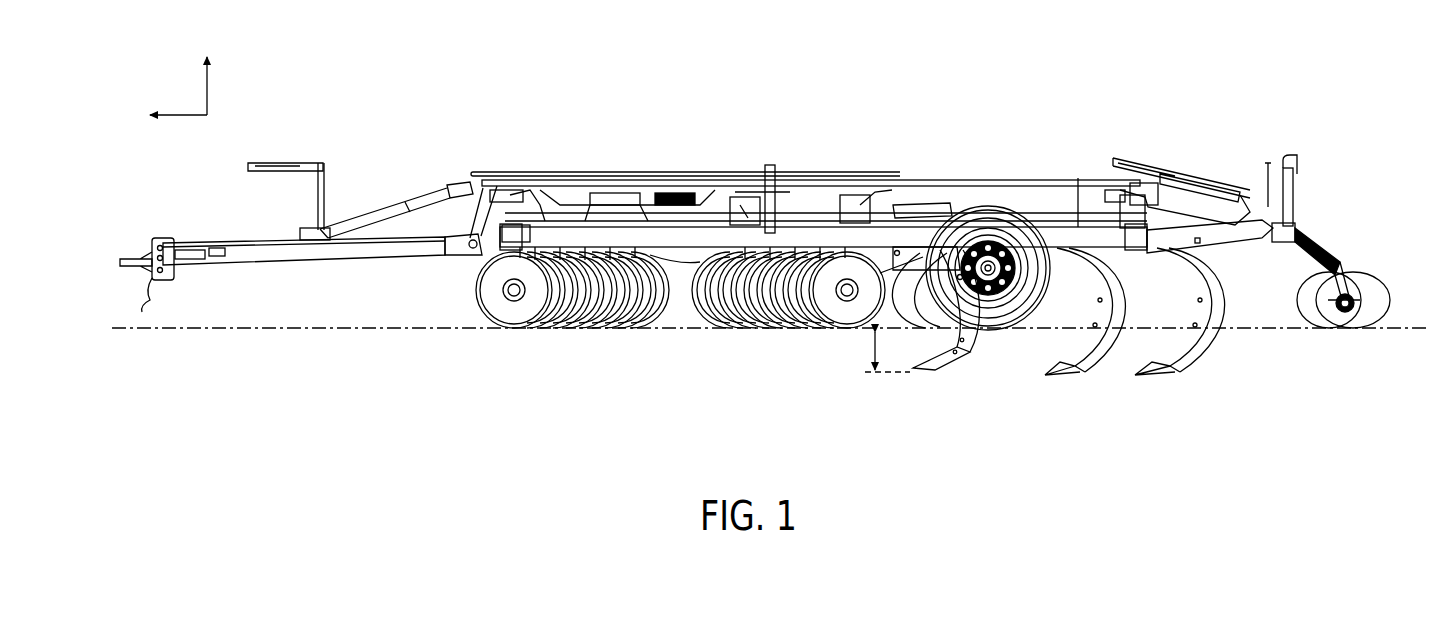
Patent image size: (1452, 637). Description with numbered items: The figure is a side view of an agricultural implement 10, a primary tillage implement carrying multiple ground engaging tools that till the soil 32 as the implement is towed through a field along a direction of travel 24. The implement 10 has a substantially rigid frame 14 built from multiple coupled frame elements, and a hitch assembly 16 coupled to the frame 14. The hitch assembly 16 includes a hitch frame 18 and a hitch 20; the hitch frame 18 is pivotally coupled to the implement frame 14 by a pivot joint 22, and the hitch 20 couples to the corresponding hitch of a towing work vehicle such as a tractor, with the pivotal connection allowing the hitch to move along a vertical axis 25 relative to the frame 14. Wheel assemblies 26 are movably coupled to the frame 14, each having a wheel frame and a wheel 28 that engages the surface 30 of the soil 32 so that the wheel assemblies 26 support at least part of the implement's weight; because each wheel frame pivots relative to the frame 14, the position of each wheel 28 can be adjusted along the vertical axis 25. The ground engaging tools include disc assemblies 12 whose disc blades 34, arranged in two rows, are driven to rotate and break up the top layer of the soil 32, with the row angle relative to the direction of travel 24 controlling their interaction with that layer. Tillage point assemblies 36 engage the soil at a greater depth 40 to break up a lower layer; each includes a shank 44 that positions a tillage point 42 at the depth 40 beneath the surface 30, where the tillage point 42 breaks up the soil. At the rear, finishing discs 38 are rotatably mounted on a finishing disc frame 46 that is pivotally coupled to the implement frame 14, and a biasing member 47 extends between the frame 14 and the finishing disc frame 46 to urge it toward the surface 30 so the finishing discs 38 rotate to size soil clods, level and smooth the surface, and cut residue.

The agricultural implement 10 is at (440, 75).
The disc assemblies 12 is at (490, 360).
The frame 14 is at (800, 195).
The hitch assembly 16 is at (200, 200).
The hitch frame 18 is at (272, 252).
The hitch 20 is at (138, 256).
The pivot joint 22 is at (468, 258).
The direction of travel 24 is at (190, 113).
The vertical axis 25 is at (210, 103).
The wheel assemblies 26 is at (985, 168).
The wheel 28 is at (1005, 212).
The surface 30 is at (218, 327).
The soil 32 is at (342, 375).
The disc blades 34 is at (556, 360).
The tillage point assemblies 36 is at (455, 332).
The finishing discs 38 is at (1375, 345).
The depth 40 is at (873, 356).
The tillage point 42 is at (925, 378).
The shank 44 is at (965, 343).
The finishing disc frame 46 is at (1218, 240).
The biasing member 47 is at (1178, 182).